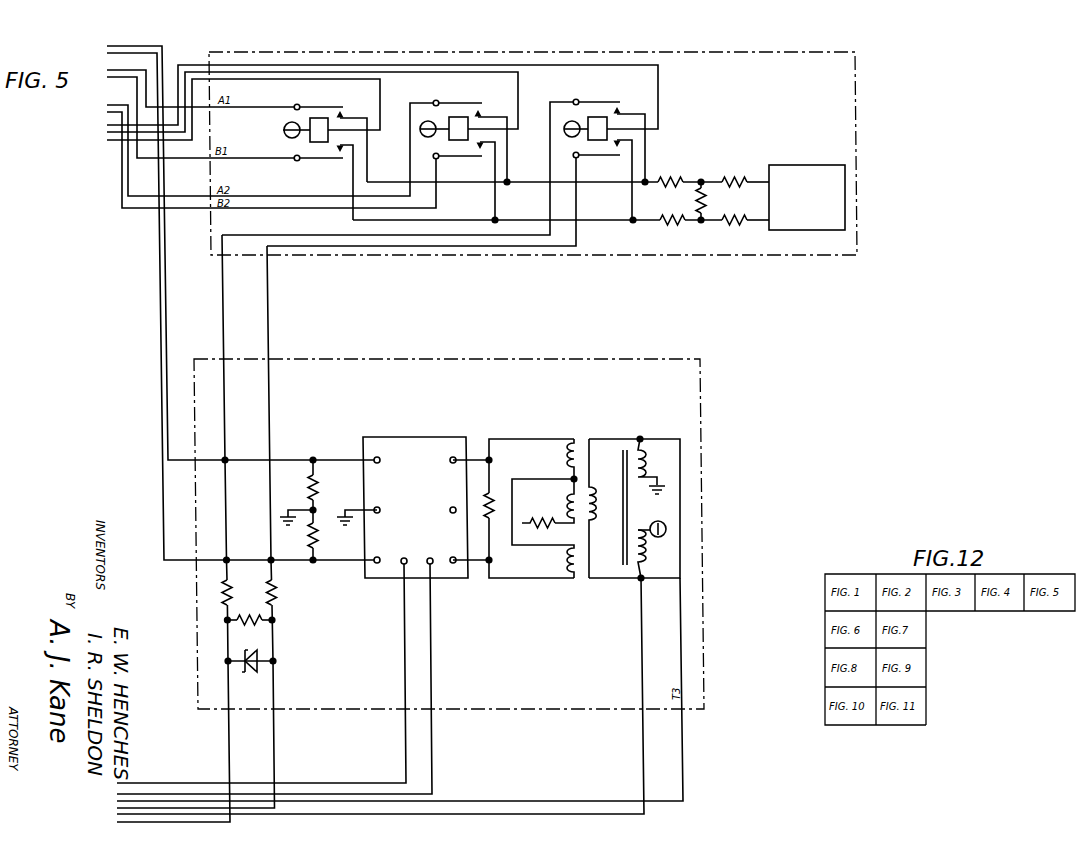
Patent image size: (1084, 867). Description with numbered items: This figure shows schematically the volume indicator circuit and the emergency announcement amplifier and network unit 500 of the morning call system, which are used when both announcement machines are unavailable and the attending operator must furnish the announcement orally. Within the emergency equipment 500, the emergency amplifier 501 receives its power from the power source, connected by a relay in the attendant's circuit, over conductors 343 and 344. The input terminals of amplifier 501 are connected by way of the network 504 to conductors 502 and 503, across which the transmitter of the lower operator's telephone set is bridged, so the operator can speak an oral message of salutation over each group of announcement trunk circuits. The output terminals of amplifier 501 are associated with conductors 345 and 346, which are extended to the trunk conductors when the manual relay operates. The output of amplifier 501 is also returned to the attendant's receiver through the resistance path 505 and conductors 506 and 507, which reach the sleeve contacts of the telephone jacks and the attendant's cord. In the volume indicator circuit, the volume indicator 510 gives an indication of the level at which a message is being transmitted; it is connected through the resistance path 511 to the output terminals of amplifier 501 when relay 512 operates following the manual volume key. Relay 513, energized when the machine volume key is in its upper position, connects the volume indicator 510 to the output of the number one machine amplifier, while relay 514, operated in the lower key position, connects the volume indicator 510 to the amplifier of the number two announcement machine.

The conductor 343 is at (180, 783).
The conductor 344 is at (433, 763).
The conductor 345 is at (168, 307).
The conductor 346 is at (163, 332).
The emergency announcement amplifier and network unit 500 is at (521, 645).
The emergency amplifier 501 is at (410, 442).
The conductor 502 is at (680, 505).
The conductor 503 is at (642, 616).
The network 504 is at (578, 445).
The resistance path 505 is at (255, 634).
The conductor 506 is at (230, 733).
The conductor 507 is at (274, 735).
The volume indicator 510 is at (793, 165).
The resistance path 511 is at (689, 186).
The relay 512 is at (588, 138).
The relay 513 is at (310, 140).
The relay 514 is at (449, 138).